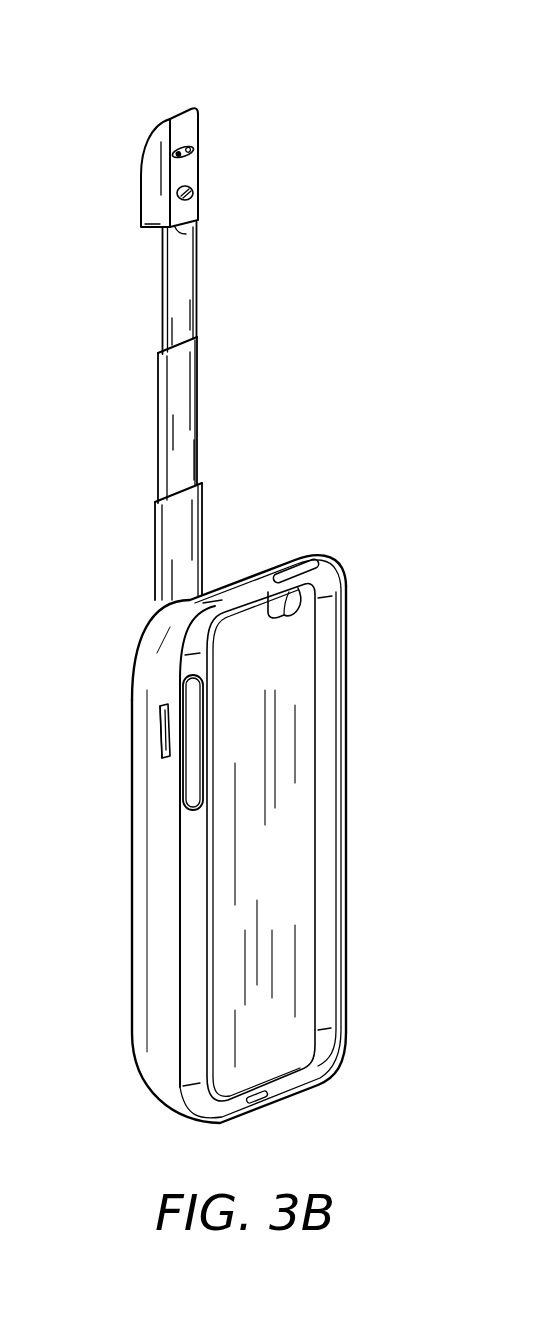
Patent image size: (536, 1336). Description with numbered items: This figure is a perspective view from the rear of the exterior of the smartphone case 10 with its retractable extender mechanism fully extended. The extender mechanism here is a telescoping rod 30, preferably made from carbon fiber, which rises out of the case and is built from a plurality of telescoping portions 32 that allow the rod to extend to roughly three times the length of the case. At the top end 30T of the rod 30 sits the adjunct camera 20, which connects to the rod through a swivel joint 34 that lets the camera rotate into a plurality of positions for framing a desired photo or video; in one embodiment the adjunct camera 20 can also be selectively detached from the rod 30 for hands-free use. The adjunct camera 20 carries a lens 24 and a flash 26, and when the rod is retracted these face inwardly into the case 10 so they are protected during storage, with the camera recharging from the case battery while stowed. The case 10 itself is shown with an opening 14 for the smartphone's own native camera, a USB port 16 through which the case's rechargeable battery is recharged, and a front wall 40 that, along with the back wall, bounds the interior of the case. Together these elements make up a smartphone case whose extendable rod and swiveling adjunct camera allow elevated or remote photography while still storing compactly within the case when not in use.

The case 10 is at (356, 574).
The opening 14 is at (302, 615).
The USB port 16 is at (160, 742).
The adjunct camera 20 is at (230, 114).
The lens 24 is at (197, 143).
The flash 26 is at (178, 151).
The telescoping rod 30 is at (129, 379).
The top end 30T is at (184, 229).
The telescoping portions 32 is at (181, 424).
The swivel joint 34 is at (188, 195).
The front wall 40 is at (288, 862).